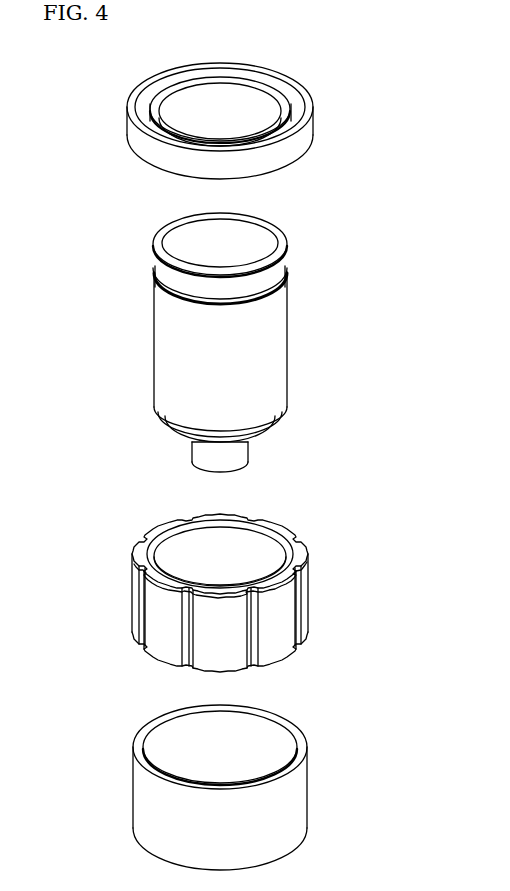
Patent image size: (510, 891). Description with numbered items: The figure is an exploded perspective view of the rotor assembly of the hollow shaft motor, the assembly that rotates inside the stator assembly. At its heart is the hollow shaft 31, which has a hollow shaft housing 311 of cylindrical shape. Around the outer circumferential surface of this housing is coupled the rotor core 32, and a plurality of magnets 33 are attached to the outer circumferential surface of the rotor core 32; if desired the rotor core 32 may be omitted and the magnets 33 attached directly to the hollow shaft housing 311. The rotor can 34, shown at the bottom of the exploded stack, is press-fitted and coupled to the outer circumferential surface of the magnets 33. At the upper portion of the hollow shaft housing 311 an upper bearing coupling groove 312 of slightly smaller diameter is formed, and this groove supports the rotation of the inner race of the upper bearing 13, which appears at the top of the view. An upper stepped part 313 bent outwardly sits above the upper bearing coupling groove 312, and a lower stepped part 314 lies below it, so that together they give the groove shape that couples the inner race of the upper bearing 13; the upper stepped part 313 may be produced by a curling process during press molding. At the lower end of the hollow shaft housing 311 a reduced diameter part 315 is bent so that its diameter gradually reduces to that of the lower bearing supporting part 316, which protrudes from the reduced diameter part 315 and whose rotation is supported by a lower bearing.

The upper bearing 13 is at (312, 132).
The hollow shaft 31 is at (220, 336).
The hollow shaft housing 311 is at (279, 367).
The upper bearing coupling groove 312 is at (284, 265).
The upper stepped part 313 is at (276, 226).
The lower stepped part 314 is at (288, 286).
The reduced diameter part 315 is at (268, 430).
The lower bearing supporting part 316 is at (192, 448).
The rotor core 32 is at (143, 554).
The magnets 33 is at (153, 608).
The rotor can 34 is at (300, 795).